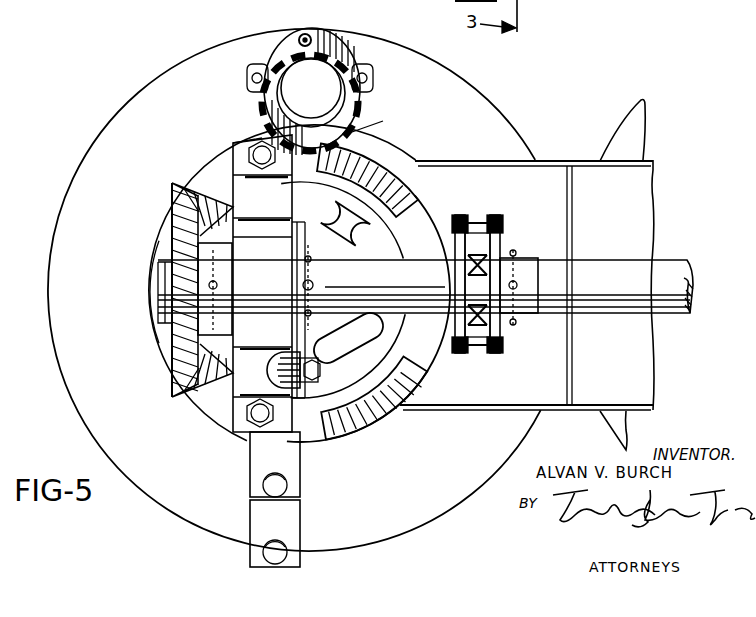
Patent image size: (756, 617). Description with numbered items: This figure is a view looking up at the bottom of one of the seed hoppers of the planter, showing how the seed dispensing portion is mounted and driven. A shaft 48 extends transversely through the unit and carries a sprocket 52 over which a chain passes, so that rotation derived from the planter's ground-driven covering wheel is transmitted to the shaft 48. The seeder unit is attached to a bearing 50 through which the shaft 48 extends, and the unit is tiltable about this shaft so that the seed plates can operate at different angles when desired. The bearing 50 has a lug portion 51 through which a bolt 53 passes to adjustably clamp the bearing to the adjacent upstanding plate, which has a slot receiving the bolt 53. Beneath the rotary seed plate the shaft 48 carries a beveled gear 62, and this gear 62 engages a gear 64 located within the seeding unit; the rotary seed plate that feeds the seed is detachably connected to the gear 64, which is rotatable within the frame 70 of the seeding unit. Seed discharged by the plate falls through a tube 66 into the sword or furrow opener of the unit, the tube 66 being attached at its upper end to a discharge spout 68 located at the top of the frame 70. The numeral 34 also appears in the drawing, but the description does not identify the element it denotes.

The section line indicator 34 is at (545, 3).
The shaft 48 is at (366, 288).
The bearing 50 is at (272, 269).
The lug portion 51 is at (276, 360).
The sprocket 52 is at (496, 228).
The bolt 53 is at (312, 386).
The beveled gear 62 is at (176, 357).
The gear 64 is at (388, 151).
The tube 66 is at (362, 100).
The discharge spout 68 is at (312, 28).
The frame 70 is at (472, 462).